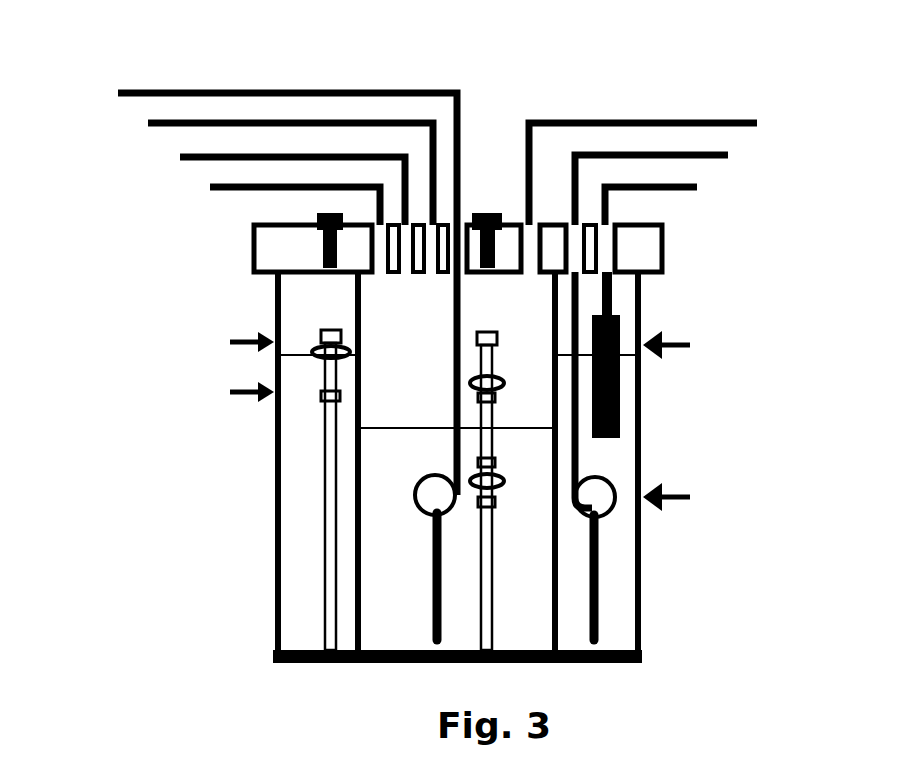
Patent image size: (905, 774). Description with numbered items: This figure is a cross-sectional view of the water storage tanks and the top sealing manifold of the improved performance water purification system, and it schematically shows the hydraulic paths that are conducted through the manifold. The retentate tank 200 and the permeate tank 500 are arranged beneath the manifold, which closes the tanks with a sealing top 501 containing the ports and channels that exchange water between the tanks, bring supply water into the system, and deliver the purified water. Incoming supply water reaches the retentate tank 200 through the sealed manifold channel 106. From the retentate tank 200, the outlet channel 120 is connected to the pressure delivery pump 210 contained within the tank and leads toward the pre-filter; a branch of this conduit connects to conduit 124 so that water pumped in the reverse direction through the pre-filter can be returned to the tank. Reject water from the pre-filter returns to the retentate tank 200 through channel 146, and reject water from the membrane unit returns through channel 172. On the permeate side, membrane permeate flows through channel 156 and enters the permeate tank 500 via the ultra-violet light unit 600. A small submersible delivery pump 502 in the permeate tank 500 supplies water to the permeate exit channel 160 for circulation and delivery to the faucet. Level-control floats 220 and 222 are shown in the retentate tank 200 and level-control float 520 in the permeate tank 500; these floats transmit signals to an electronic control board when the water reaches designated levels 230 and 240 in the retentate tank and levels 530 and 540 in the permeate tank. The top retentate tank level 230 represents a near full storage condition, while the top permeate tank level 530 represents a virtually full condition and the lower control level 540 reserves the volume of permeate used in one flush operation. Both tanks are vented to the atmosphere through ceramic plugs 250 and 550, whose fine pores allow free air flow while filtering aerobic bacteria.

The sealed manifold channel 106 is at (748, 128).
The outlet channel 120 is at (115, 100).
The conduit 124 is at (148, 132).
The channel 146 is at (180, 167).
The channel 156 is at (697, 188).
The permeate exit channel 160 is at (712, 165).
The channel 172 is at (212, 180).
The retentate storage tank 200 is at (352, 490).
The pressure delivery pump 210 is at (443, 490).
The level-control float 220 is at (538, 320).
The level-control float 222 is at (490, 467).
The top retentate tank level 230 is at (663, 335).
The retentate tank level 240 is at (693, 490).
The plug 250 is at (492, 213).
The permeate tank 500 is at (639, 455).
The lid 501 is at (633, 243).
The submersible delivery pump 502 is at (585, 492).
The level-control float 520 is at (325, 363).
The top permeate tank level 530 is at (245, 333).
The lower control level 540 is at (245, 386).
The plug 550 is at (340, 213).
The ultra-violet light unit 600 is at (618, 392).